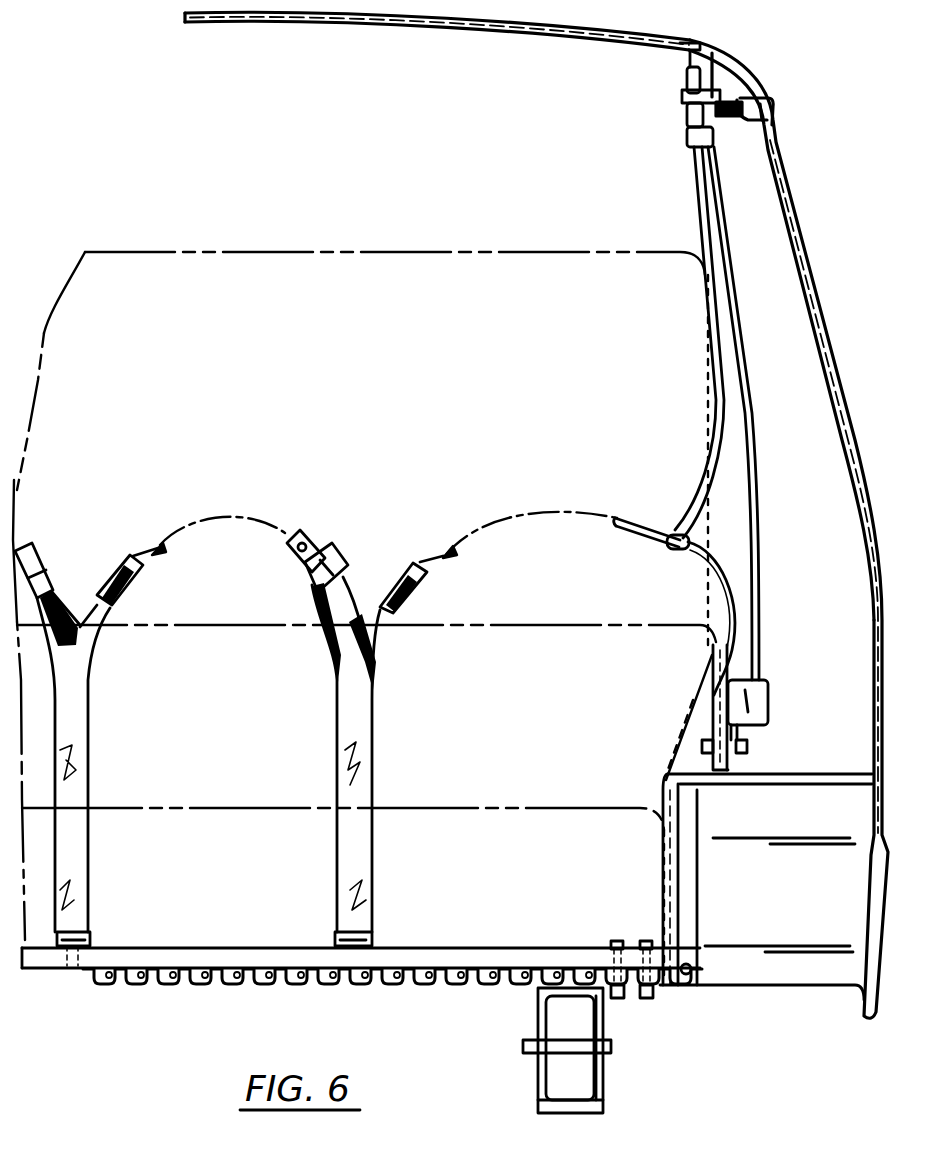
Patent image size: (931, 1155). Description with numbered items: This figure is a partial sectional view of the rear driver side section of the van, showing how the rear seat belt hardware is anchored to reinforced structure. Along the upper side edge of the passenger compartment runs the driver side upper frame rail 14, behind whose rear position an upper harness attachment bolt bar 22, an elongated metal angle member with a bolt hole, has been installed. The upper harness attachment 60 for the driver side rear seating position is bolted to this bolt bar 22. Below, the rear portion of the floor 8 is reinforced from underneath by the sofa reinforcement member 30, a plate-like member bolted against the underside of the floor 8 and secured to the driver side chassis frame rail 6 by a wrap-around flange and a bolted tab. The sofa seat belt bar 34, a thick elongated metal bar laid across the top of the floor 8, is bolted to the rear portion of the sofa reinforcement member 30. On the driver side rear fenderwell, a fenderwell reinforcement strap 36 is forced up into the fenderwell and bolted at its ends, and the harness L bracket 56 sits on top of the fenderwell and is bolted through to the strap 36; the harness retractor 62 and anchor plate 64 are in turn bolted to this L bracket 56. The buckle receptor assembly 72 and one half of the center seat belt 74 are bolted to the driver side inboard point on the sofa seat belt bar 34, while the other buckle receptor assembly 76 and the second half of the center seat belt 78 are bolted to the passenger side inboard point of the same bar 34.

The driver side chassis frame rail 6 is at (540, 1088).
The floor 8 is at (445, 995).
The driver side upper frame rail 14 is at (762, 129).
The rear-position upper harness attachment bolt bar 22 is at (725, 82).
The driver side sofa reinforcement member 30 is at (605, 1085).
The sofa seat belt bar 34 is at (525, 952).
The fenderwell reinforcement strap 36 is at (698, 885).
The harness L bracket 56 is at (728, 772).
The upper harness attachment 60 is at (685, 113).
The harness retractor 62 is at (770, 704).
The anchor plate 64 is at (713, 711).
The buckle receptor assembly 72 is at (417, 562).
The center seat belt first half 74 is at (330, 545).
The buckle receptor assembly 76 is at (48, 548).
The center seat belt second half 78 is at (135, 558).